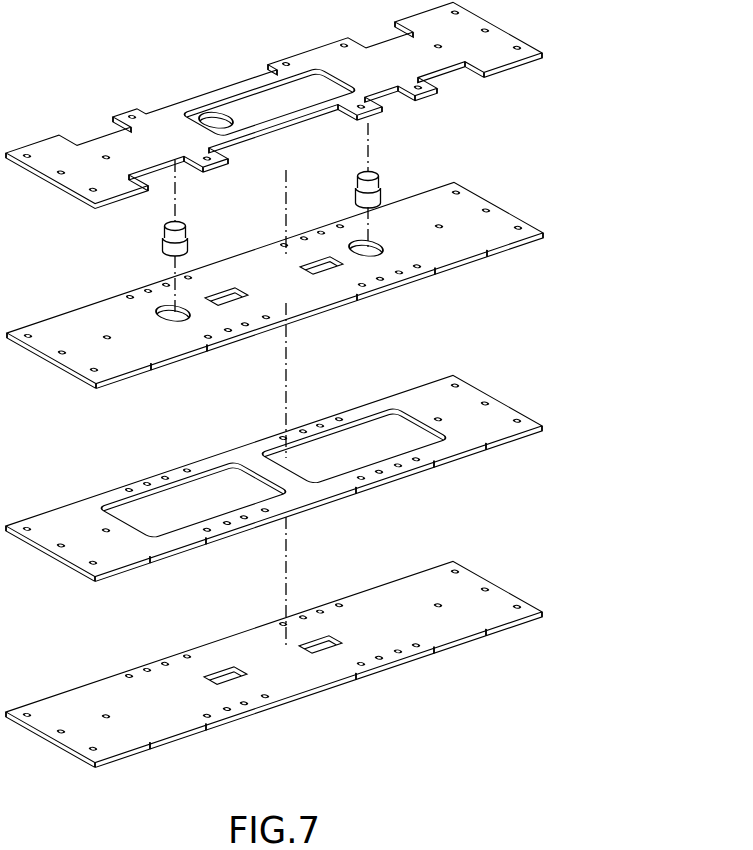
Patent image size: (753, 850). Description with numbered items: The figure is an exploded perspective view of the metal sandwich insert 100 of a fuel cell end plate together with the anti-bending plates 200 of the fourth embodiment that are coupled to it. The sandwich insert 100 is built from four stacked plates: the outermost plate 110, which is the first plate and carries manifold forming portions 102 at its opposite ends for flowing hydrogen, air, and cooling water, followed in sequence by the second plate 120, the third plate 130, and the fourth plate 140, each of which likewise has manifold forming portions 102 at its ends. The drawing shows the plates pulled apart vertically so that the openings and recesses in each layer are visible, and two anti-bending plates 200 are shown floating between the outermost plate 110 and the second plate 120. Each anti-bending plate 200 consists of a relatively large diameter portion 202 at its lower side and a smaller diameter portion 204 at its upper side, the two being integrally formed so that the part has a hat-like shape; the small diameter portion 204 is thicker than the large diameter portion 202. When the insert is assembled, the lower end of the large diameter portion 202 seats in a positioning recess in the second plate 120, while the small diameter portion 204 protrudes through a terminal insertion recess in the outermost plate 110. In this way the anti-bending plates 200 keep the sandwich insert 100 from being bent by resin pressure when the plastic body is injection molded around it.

The sandwich insert 100 is at (626, 90).
The manifold forming portions 102 is at (58, 155).
The outermost plate 110 is at (308, 105).
The second plate 120 is at (309, 284).
The third plate 130 is at (492, 393).
The fourth plate 140 is at (492, 579).
The anti-bending plate 200 is at (236, 212).
The large diameter portion 202 is at (187, 238).
The small diameter portion 204 is at (164, 225).